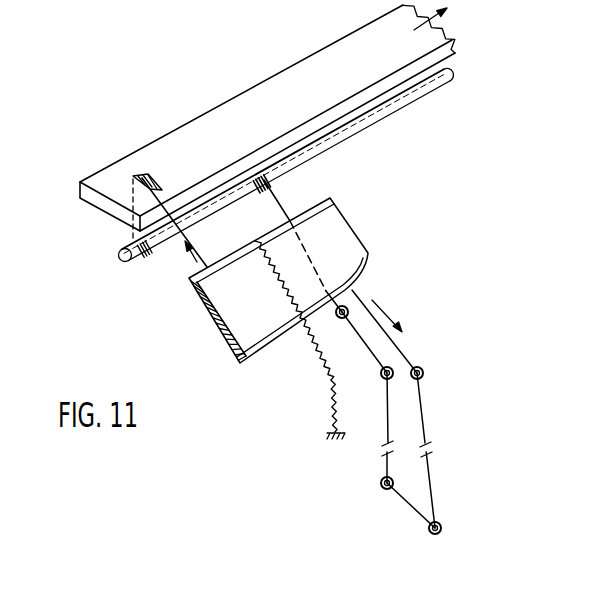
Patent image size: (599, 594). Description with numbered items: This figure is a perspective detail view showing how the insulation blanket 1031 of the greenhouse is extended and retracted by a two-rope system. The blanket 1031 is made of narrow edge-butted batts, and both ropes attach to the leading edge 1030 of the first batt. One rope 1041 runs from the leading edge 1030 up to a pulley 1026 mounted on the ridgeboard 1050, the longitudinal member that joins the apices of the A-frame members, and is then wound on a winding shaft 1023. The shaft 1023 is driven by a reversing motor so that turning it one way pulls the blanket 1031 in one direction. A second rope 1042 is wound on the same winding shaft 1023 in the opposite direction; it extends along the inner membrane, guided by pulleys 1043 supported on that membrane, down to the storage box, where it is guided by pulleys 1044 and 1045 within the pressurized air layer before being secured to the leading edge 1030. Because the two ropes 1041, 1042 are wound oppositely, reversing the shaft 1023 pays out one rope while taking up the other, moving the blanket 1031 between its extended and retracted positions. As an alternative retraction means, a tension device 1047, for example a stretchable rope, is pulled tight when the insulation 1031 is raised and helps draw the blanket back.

The ridgeboard 1050 is at (252, 107).
The pulley 1026 is at (135, 176).
The winding shaft 1023 is at (122, 252).
The rope 1041 is at (198, 248).
The leading edge 1030 is at (300, 212).
The insulation blanket 1031 is at (271, 311).
The pulleys 1043 is at (350, 300).
The second rope 1042 is at (402, 352).
The pulley 1044 is at (380, 485).
The pulley 1045 is at (442, 528).
The tension device 1047 is at (332, 372).